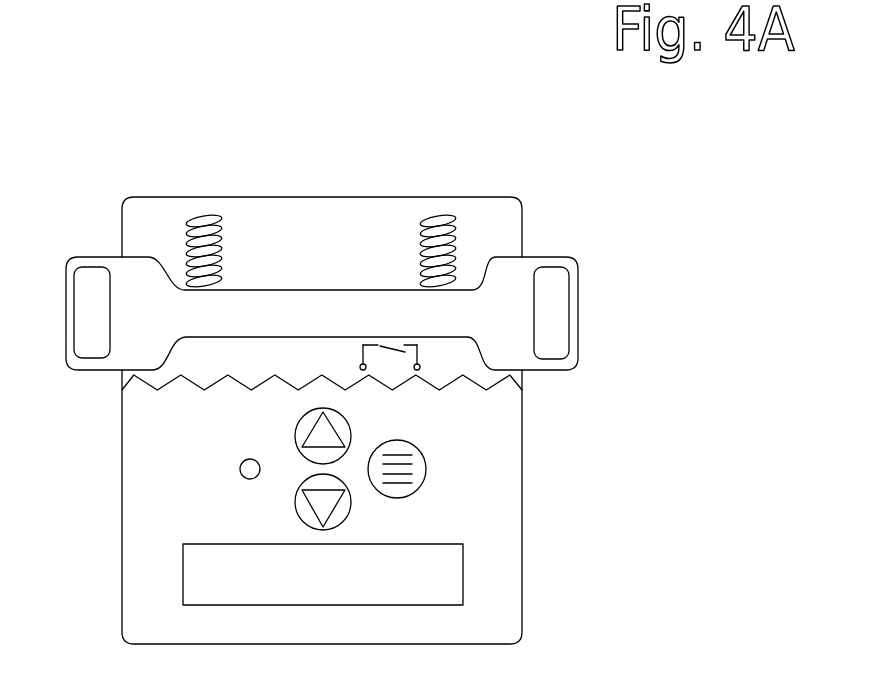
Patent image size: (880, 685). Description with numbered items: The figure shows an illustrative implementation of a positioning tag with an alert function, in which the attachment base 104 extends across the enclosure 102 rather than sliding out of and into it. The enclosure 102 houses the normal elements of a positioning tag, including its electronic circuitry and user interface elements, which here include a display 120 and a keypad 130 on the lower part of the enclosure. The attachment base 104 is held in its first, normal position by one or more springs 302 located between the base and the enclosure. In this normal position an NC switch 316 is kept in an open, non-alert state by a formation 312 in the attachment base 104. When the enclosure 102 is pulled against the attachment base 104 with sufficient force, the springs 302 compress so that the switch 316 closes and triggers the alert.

The enclosure 102 is at (457, 197).
The attachment base 104 is at (90, 257).
The spring 302 is at (223, 233).
The formation 312 is at (385, 343).
The NC switch 316 is at (365, 351).
The keypad 130 is at (230, 479).
The display 120 is at (177, 582).